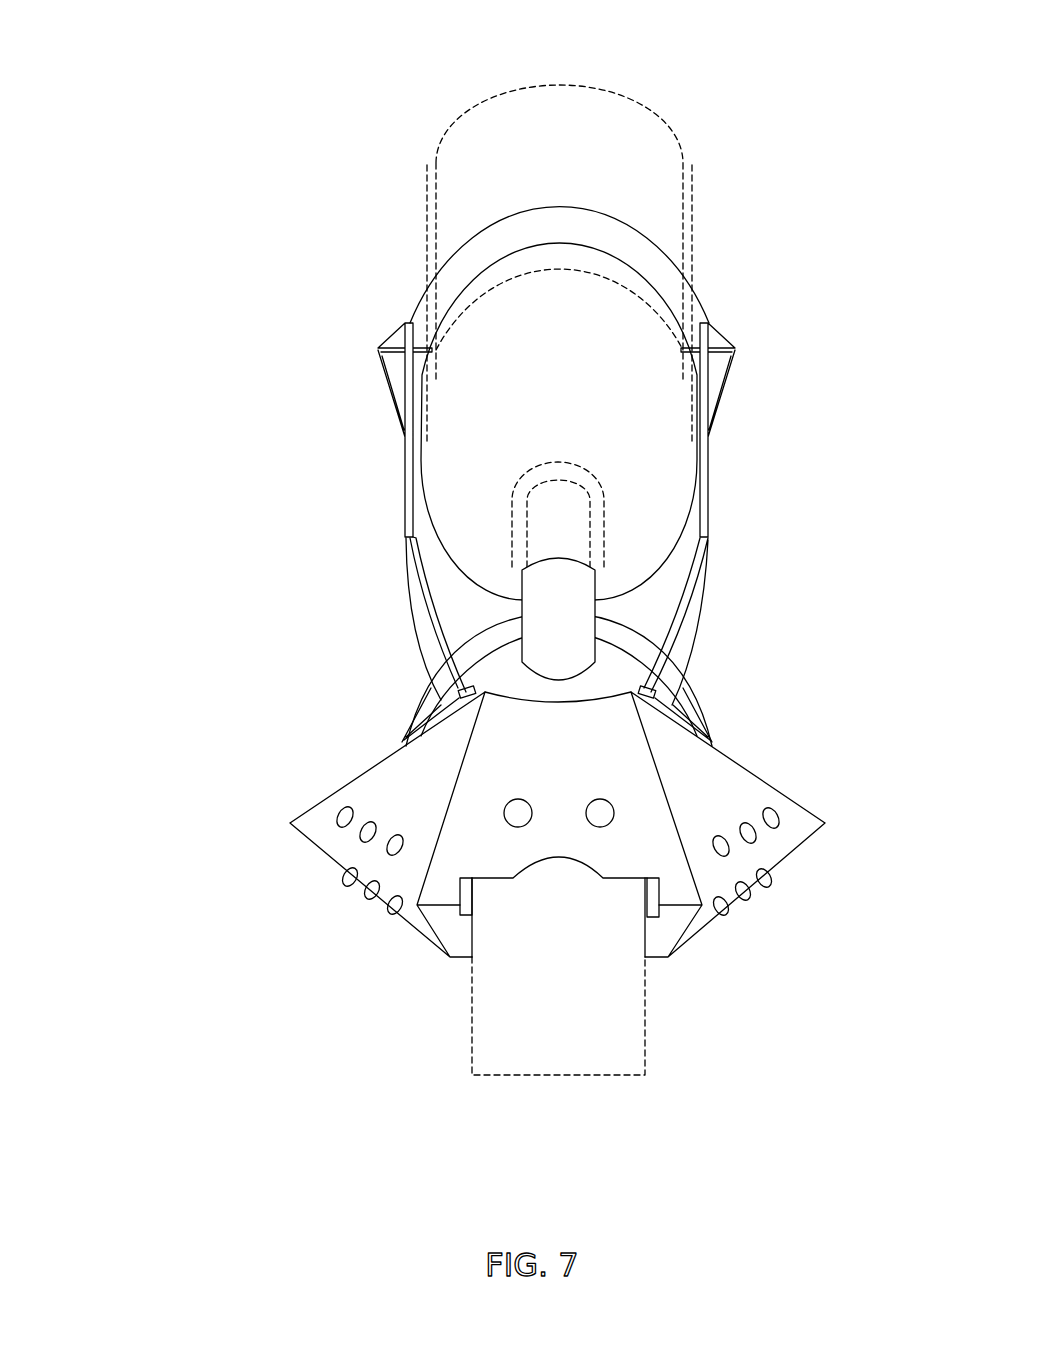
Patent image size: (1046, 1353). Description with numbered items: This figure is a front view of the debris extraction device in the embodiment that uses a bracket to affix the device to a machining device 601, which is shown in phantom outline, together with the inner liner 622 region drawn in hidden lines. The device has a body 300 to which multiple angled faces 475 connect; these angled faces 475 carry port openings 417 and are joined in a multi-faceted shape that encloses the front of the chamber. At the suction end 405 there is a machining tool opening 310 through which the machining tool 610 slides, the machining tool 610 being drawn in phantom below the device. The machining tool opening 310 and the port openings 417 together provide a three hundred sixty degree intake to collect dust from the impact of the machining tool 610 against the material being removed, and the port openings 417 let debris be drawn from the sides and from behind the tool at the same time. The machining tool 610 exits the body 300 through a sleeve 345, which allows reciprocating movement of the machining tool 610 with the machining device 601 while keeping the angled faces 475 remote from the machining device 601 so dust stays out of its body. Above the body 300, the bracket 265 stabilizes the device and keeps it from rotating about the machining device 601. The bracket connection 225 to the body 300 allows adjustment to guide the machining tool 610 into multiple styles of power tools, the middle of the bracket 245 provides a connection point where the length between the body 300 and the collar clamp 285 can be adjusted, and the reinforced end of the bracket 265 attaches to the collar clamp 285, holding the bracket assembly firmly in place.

The machining device 601 is at (540, 168).
The collar clamp 285 is at (488, 243).
The inner liner (phantom) 622 is at (553, 347).
The bracket 265 is at (720, 362).
The middle of the bracket 245 is at (410, 588).
The sleeve 345 is at (567, 607).
The body 300 is at (495, 668).
The bracket connection 225 is at (675, 708).
The angled faces 475 is at (702, 782).
The port openings 417 is at (367, 893).
The machining tool opening 310 is at (465, 898).
The suction end 405 is at (560, 866).
The machining tool 610 is at (534, 1049).